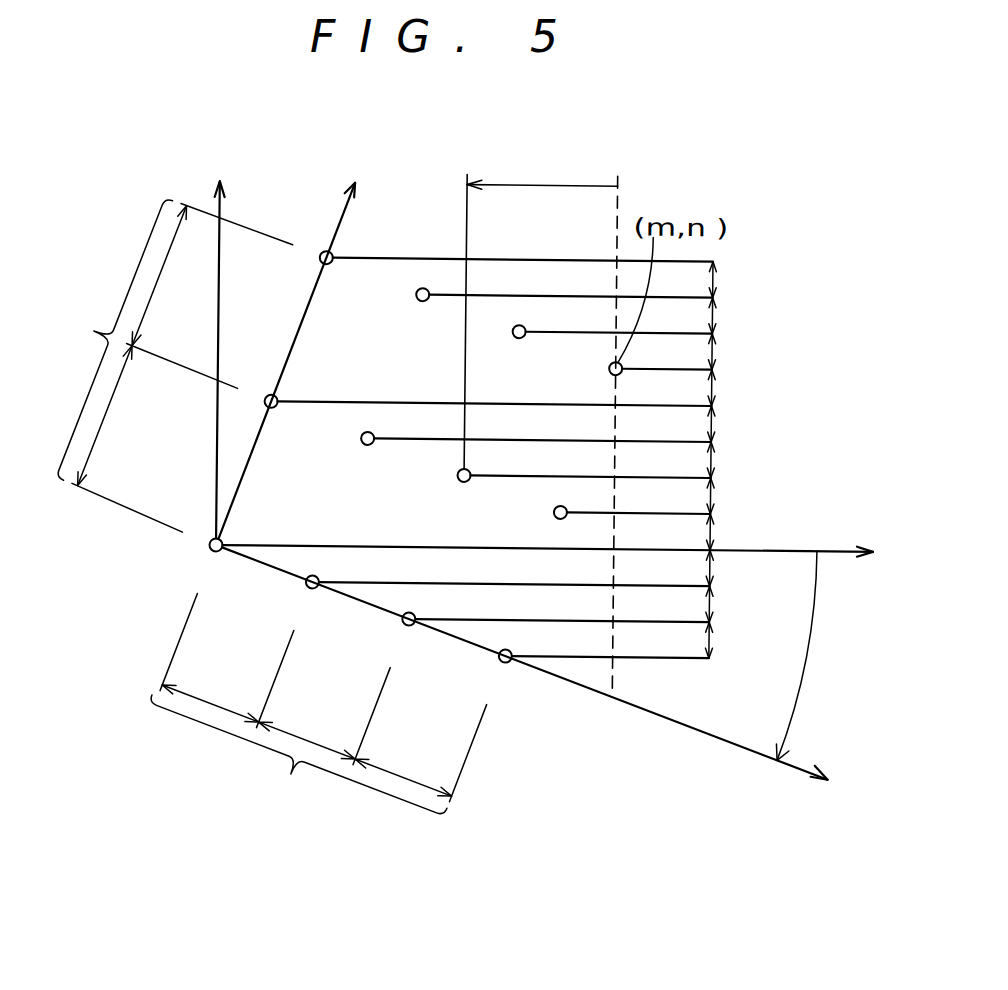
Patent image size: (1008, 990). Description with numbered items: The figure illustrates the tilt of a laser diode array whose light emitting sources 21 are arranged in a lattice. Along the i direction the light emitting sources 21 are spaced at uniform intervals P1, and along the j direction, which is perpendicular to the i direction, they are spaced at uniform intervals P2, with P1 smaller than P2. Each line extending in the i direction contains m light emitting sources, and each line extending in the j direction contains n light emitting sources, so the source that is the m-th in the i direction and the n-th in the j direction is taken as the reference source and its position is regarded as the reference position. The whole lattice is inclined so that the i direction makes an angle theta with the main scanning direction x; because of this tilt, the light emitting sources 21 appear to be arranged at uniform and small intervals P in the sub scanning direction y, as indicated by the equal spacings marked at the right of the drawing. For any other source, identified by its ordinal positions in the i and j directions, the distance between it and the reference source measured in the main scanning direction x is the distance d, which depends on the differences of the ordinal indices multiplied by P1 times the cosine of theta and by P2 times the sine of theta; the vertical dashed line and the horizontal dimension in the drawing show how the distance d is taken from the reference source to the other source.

The light emitting sources 21 is at (317, 252).
The apparent interval in the sub scanning direction P is at (721, 460).
The interval in the i direction P1 is at (323, 697).
The interval in the j direction P2 is at (183, 367).
The number of light emitting sources in a line in the i direction m is at (295, 763).
The number of light emitting sources in a line in the j direction n is at (105, 335).
The main scanning direction x is at (547, 568).
The sub scanning direction y is at (225, 352).
The i direction i is at (532, 677).
The j direction j is at (457, 468).
The distance d(q, r) in the main scanning direction d is at (540, 422).